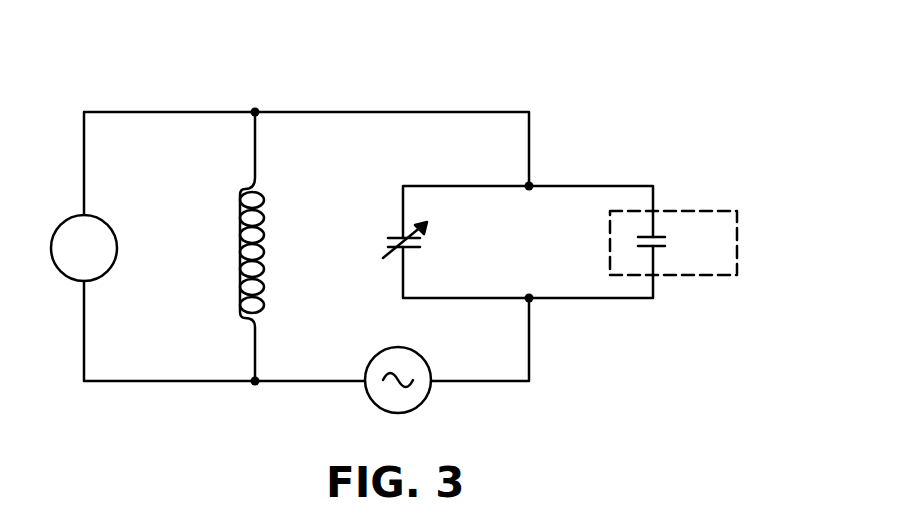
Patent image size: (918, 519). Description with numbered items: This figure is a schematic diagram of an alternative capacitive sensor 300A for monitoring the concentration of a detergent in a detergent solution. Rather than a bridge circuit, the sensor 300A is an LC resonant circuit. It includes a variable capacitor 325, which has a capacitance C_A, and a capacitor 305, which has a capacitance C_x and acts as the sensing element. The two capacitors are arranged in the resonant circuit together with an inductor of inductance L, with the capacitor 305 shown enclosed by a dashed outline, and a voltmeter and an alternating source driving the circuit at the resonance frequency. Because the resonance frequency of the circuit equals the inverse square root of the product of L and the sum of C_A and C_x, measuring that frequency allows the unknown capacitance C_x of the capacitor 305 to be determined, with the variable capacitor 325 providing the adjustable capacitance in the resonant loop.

The sensor 300A is at (437, 228).
The variable capacitor 325 is at (398, 232).
The capacitor 305 is at (737, 240).